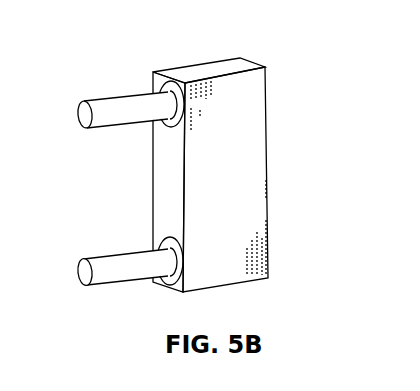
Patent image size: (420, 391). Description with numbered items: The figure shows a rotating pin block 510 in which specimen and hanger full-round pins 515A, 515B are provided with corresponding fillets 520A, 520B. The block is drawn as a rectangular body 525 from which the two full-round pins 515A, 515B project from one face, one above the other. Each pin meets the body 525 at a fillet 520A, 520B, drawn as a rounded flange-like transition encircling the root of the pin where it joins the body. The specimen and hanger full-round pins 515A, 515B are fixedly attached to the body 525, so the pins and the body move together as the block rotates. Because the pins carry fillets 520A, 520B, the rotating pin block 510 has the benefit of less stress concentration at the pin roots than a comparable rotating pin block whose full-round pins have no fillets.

The rotating pin block 510 is at (198, 150).
The specimen full-round pin 515A is at (112, 128).
The hanger full-round pin 515B is at (105, 253).
The fillet 520A is at (177, 102).
The fillet 520B is at (172, 257).
The body 525 is at (198, 155).